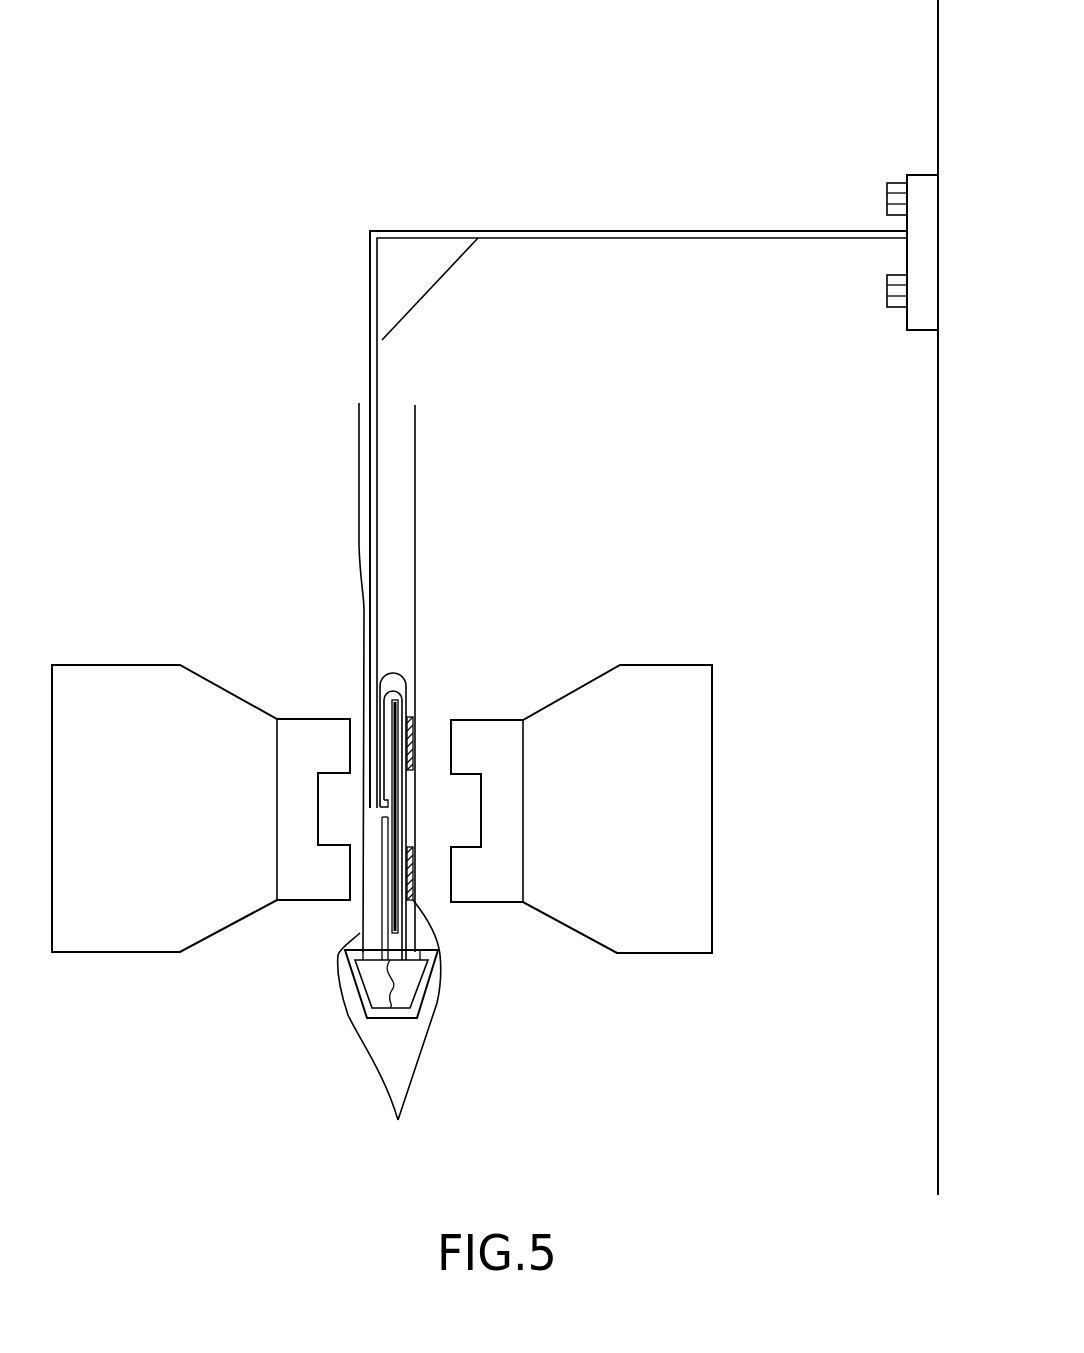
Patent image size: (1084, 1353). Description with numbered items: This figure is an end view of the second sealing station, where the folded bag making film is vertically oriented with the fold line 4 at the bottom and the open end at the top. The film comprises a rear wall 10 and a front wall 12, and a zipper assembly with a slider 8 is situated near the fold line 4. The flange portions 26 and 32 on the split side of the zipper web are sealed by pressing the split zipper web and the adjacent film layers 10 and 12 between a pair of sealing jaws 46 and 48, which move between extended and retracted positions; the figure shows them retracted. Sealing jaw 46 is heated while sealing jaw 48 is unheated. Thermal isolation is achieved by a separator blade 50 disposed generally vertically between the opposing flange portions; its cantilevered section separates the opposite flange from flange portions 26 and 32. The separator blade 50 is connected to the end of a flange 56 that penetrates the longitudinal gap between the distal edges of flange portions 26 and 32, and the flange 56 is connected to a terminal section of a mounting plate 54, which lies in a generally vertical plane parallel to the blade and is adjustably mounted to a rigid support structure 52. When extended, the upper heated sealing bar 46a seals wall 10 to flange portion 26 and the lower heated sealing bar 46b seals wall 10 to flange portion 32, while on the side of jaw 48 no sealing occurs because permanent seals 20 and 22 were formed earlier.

The fold line 4 is at (398, 1120).
The slider 8 is at (427, 990).
The rear wall 10 is at (359, 560).
The front wall 12 is at (417, 562).
The permanent seal 20 is at (413, 870).
The permanent seal 22 is at (413, 745).
The flange portion 26 is at (382, 703).
The short flange 32 is at (385, 925).
The sealing jaw 46 is at (90, 665).
The upper heated sealing bar 46a is at (333, 747).
The lower heated sealing bar 46b is at (340, 868).
The sealing jaw 48 is at (673, 665).
The separator blade 50 is at (395, 820).
The rigid support structure 52 is at (358, 392).
The mounting plate 54 is at (375, 608).
The flange 56 is at (380, 808).